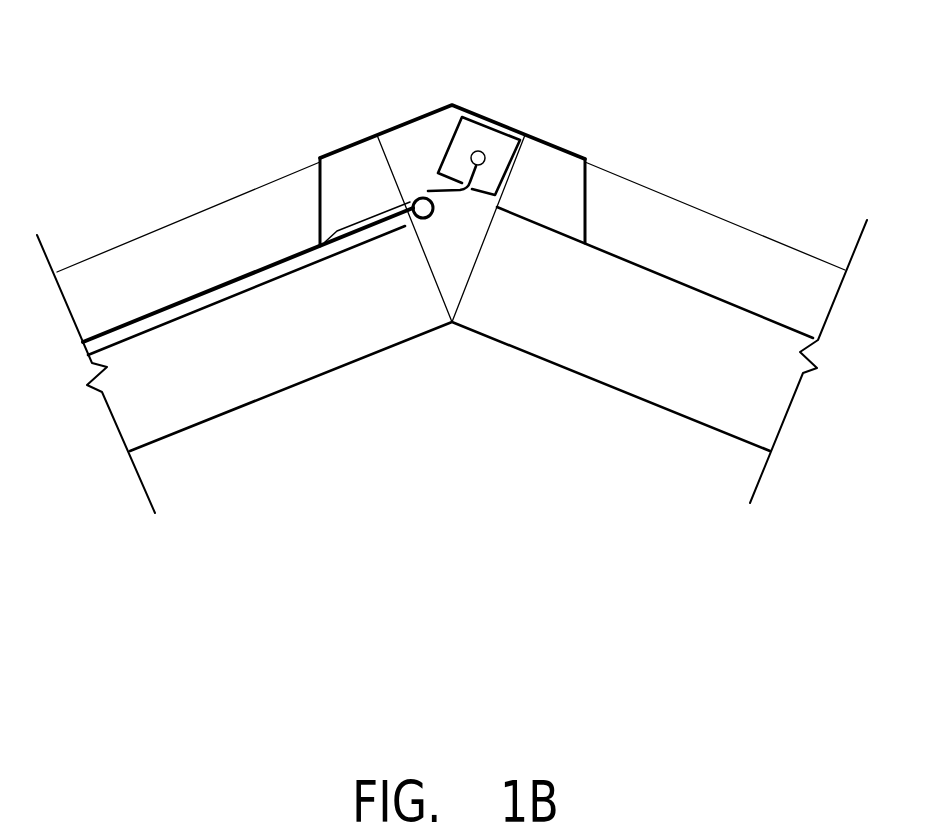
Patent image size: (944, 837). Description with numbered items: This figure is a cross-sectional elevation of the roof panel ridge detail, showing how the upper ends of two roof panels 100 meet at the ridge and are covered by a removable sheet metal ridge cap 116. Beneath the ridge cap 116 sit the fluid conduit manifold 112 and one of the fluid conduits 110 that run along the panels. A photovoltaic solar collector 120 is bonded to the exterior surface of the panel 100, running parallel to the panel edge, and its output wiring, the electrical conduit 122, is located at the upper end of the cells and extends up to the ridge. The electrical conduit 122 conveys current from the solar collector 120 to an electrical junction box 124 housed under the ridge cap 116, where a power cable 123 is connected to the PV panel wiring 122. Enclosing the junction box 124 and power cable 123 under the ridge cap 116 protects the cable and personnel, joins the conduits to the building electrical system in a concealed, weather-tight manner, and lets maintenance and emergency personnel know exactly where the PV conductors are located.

The roof panel 100 is at (190, 360).
The fluid conduit 110 is at (315, 262).
The manifold 112 is at (408, 197).
The ridge cap 116 is at (570, 152).
The photovoltaic solar collector 120 is at (230, 281).
The electrical conduit 122 is at (428, 191).
The power cable 123 is at (479, 151).
The electrical junction box 124 is at (492, 128).